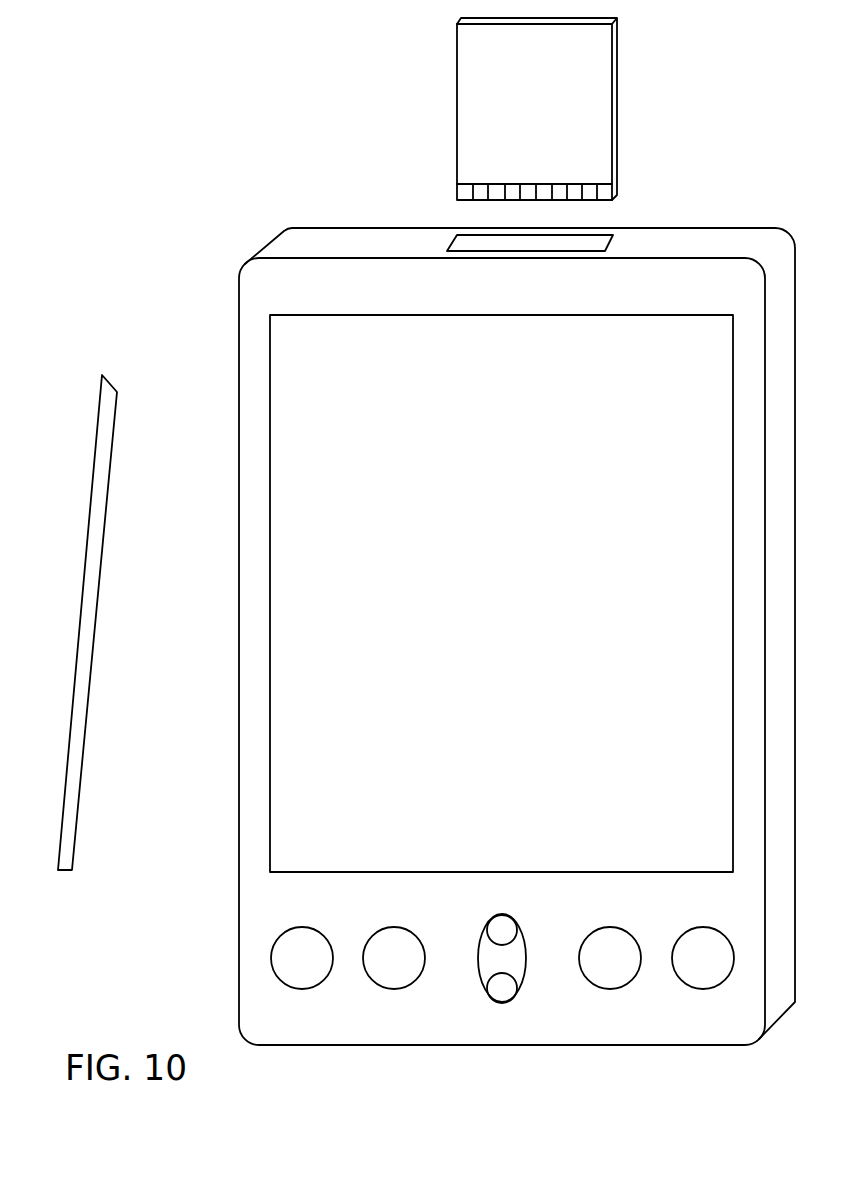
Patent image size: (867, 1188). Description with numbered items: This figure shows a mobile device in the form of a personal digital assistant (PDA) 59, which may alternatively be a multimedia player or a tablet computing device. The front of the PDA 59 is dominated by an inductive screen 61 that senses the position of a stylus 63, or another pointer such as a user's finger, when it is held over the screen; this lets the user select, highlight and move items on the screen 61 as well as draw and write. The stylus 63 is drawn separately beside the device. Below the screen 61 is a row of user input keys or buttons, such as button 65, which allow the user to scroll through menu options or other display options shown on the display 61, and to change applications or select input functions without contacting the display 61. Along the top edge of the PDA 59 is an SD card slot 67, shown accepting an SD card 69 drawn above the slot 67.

The personal digital assistant 59 is at (206, 425).
The inductive screen 61 is at (448, 589).
The stylus 63 is at (72, 874).
The button 65 is at (285, 950).
The SD card slot 67 is at (533, 243).
The SD card 69 is at (458, 112).